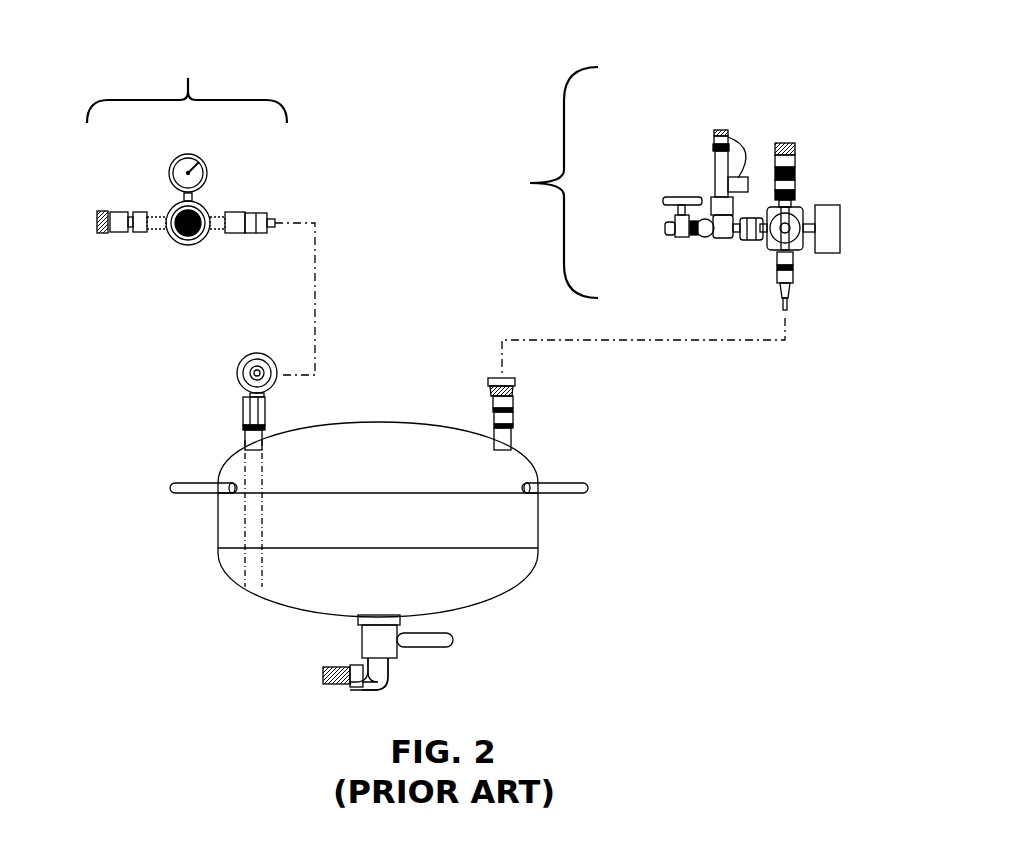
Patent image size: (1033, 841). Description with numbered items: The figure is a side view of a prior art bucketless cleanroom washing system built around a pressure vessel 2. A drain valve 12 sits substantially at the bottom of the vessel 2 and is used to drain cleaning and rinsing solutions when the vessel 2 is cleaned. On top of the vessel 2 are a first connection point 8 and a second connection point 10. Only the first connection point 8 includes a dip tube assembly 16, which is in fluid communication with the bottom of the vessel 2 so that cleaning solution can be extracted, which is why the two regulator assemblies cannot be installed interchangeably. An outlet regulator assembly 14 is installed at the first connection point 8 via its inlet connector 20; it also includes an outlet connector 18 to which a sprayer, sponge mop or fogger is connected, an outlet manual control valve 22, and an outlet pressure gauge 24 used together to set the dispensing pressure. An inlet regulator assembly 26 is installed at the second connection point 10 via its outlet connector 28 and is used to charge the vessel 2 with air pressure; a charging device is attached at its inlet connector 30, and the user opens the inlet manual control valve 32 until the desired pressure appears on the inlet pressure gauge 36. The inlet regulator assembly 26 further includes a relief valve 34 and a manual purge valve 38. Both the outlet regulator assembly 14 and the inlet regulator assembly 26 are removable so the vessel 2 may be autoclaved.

The vessel 2 is at (540, 527).
The first connection point 8 is at (238, 418).
The second connection point 10 is at (515, 413).
The drain valve 12 is at (397, 647).
The outlet regulator assembly 14 is at (199, 195).
The dip tube assembly 16 is at (245, 530).
The outlet connector 18 is at (108, 232).
The inlet connector 20 is at (252, 212).
The outlet manual control valve 22 is at (188, 237).
The outlet pressure gauge 24 is at (168, 173).
The inlet regulator assembly 26 is at (701, 205).
The outlet connector 28 is at (790, 295).
The inlet connector 30 is at (788, 140).
The inlet manual control valve 32 is at (770, 243).
The relief valve 34 is at (717, 130).
The inlet pressure gauge 36 is at (842, 223).
The manual purge valve 38 is at (672, 197).